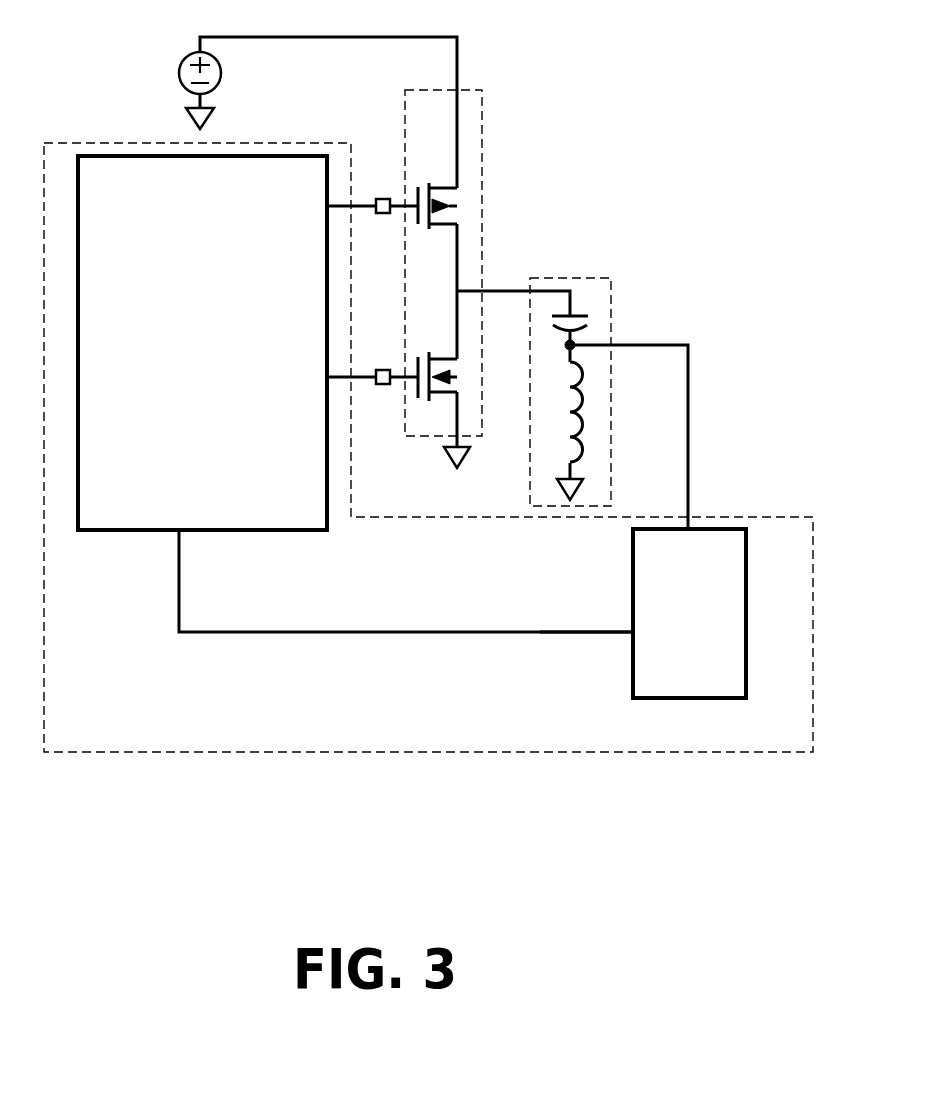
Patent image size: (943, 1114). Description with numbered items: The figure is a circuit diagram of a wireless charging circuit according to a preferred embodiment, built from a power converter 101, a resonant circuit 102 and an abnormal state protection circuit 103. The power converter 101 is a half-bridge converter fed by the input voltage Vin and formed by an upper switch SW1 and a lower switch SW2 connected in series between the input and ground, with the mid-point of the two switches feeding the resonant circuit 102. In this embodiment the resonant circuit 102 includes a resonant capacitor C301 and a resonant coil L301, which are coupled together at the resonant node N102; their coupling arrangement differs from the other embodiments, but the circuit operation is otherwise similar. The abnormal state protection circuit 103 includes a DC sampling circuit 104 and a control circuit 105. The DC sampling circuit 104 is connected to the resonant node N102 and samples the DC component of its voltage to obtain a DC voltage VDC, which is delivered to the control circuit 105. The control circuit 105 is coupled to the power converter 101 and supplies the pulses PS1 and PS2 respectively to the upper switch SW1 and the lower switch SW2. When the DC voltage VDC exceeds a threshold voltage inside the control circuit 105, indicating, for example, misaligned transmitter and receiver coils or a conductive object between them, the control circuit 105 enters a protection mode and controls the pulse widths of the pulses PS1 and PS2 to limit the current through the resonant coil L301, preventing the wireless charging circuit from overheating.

The power converter 101 is at (482, 90).
The resonant circuit 102 is at (590, 278).
The abnormal state protection circuit 103 is at (333, 753).
The DC sampling circuit 104 is at (717, 690).
The control circuit 105 is at (131, 532).
The upper switch SW1 is at (460, 204).
The lower switch SW2 is at (440, 399).
The pulse PS1 is at (381, 223).
The pulse PS2 is at (369, 365).
The resonant capacitor C301 is at (586, 322).
The resonant coil L301 is at (586, 432).
The resonant node N102 is at (578, 345).
The input voltage Vin is at (169, 73).
The DC voltage VDC is at (586, 650).